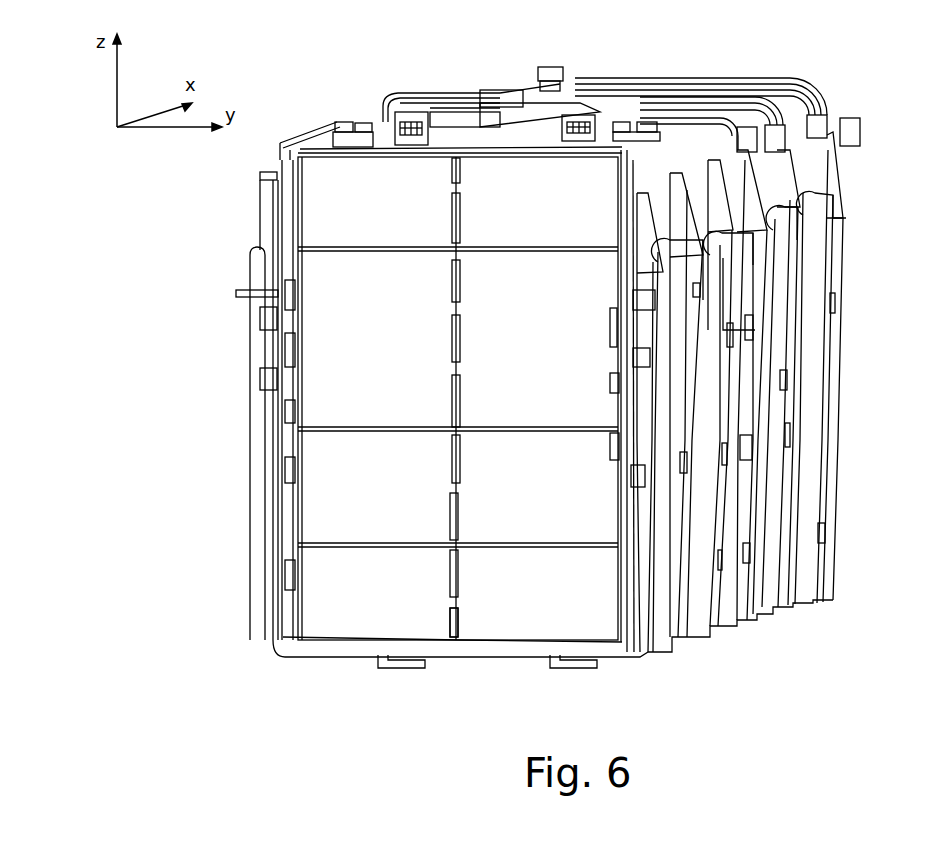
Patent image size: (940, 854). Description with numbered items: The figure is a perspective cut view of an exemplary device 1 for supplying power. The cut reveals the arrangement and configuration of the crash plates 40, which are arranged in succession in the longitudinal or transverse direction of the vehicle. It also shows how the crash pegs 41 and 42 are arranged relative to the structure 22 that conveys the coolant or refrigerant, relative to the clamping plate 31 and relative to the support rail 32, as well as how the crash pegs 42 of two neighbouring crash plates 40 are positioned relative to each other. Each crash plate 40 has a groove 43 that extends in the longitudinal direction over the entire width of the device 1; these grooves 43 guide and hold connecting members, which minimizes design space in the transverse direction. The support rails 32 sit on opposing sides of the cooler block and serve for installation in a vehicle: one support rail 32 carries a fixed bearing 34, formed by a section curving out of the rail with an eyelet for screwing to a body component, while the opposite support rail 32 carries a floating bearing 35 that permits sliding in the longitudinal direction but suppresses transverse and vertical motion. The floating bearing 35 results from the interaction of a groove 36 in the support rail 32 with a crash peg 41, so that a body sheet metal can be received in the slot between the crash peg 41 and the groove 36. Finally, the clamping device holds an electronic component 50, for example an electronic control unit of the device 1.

The device for supplying power 1 is at (850, 87).
The structure conveying the coolant or refrigerant 22 is at (453, 633).
The clamping plate 31 is at (290, 387).
The support rail 32 is at (265, 353).
The fixed bearing 34 is at (237, 293).
The floating bearing 35 is at (608, 300).
The groove 36 is at (733, 253).
The crash plate 40 is at (320, 625).
The crash peg 41 is at (640, 300).
The crash peg 42 is at (452, 190).
The groove 43 is at (355, 245).
The electronic component 50 is at (578, 115).